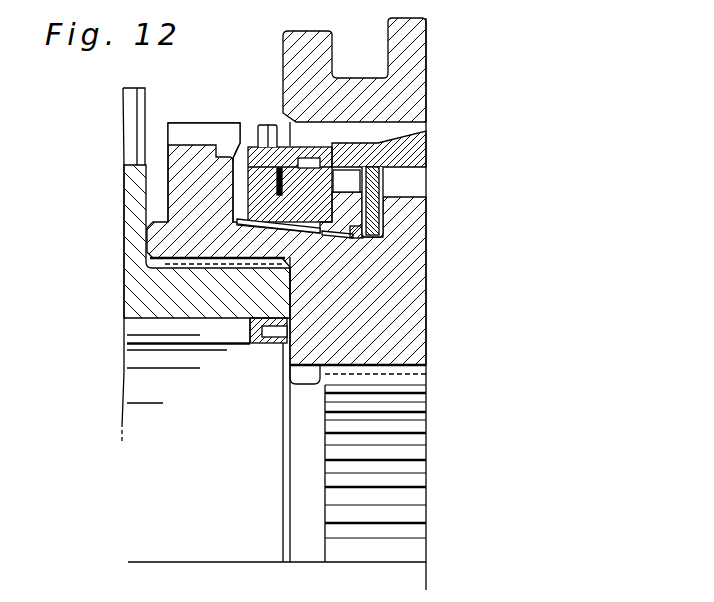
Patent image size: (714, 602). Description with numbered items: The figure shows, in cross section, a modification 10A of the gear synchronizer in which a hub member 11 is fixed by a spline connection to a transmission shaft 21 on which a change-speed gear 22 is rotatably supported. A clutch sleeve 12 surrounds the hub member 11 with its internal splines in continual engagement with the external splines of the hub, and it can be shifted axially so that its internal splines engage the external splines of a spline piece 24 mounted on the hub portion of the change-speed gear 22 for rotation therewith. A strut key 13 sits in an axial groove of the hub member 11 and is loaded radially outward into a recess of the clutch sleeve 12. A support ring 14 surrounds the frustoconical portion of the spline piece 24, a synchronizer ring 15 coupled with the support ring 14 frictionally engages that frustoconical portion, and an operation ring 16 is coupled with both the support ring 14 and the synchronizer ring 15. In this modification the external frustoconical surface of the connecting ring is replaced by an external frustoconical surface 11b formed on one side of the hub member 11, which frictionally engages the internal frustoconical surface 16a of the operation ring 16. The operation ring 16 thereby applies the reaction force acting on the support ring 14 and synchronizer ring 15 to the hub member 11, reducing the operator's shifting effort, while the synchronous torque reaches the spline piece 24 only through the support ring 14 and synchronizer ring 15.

The modification 10A is at (441, 61).
The hub member 11 is at (420, 260).
The external frustoconical surface 11b is at (362, 238).
The clutch sleeve 12 is at (428, 84).
The strut key 13 is at (424, 148).
The support ring 14 is at (266, 130).
The synchronizer ring 15 is at (240, 223).
The operation ring 16 is at (362, 199).
The internal frustoconical surface 16a is at (350, 240).
The transmission shaft 21 is at (420, 428).
The change-speed gear 22 is at (228, 318).
The spline piece 24 is at (188, 128).